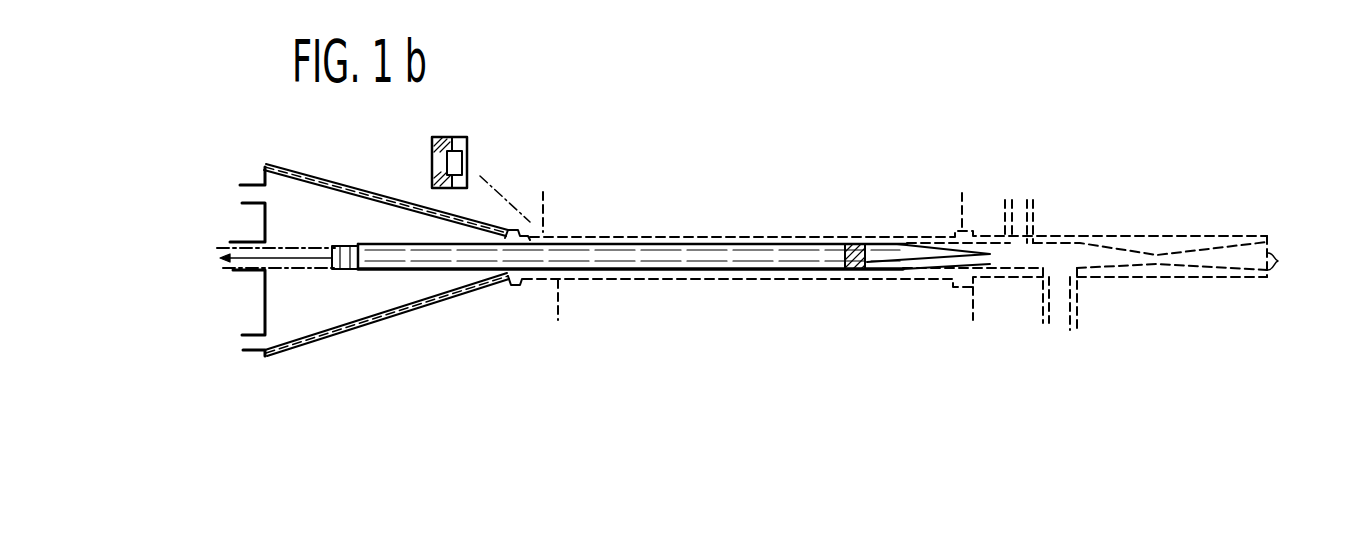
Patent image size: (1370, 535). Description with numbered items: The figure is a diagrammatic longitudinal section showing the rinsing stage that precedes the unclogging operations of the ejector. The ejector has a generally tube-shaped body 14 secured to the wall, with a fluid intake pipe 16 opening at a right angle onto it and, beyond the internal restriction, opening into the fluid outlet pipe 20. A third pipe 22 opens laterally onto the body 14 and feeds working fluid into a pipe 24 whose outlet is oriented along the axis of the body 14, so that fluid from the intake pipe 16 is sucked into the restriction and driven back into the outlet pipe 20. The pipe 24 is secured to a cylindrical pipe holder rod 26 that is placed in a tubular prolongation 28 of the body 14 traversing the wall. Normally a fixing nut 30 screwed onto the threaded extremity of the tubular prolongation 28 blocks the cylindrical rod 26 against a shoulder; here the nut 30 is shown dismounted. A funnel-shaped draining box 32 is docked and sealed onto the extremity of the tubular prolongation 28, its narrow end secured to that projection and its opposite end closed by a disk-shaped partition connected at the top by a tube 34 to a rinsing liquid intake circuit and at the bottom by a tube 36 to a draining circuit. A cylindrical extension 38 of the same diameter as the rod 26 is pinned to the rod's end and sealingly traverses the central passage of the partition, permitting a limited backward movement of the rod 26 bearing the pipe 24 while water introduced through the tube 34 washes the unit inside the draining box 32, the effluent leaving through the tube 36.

The body 14 is at (1145, 277).
The fluid intake pipe 16 is at (1080, 320).
The fluid outlet pipe 20 is at (1303, 264).
The third pipe 22 is at (1032, 210).
The pipe 24 is at (957, 255).
The cylindrical pipe holder rod 26 is at (663, 248).
The tubular prolongation 28 is at (797, 278).
The fixing nut 30 is at (468, 140).
The draining box 32 is at (350, 188).
The tube 34 is at (242, 184).
The tube 36 is at (258, 350).
The cylindrical extension 38 is at (293, 270).